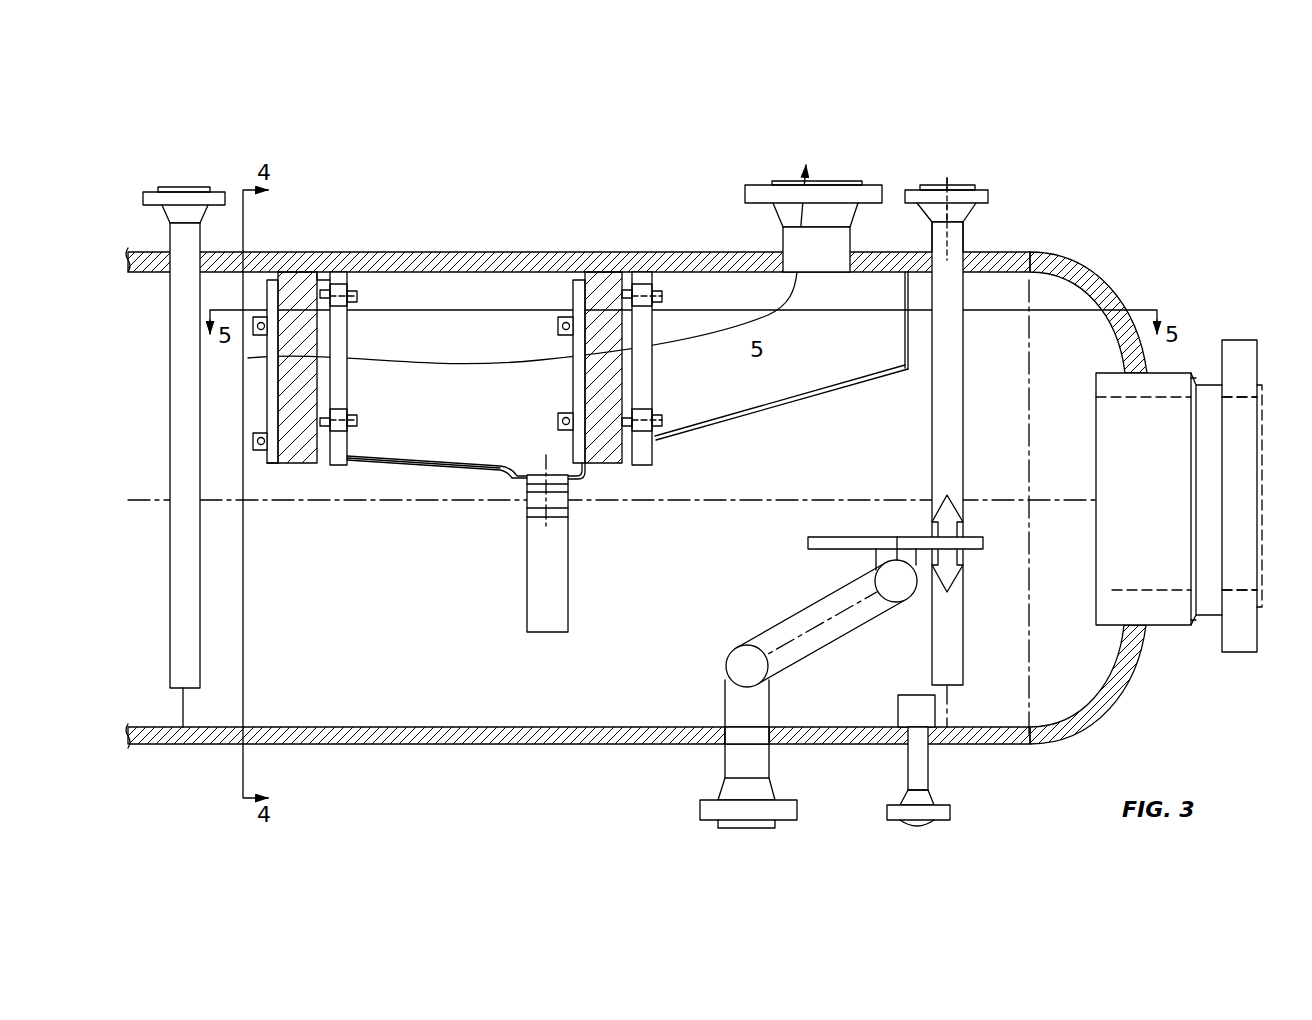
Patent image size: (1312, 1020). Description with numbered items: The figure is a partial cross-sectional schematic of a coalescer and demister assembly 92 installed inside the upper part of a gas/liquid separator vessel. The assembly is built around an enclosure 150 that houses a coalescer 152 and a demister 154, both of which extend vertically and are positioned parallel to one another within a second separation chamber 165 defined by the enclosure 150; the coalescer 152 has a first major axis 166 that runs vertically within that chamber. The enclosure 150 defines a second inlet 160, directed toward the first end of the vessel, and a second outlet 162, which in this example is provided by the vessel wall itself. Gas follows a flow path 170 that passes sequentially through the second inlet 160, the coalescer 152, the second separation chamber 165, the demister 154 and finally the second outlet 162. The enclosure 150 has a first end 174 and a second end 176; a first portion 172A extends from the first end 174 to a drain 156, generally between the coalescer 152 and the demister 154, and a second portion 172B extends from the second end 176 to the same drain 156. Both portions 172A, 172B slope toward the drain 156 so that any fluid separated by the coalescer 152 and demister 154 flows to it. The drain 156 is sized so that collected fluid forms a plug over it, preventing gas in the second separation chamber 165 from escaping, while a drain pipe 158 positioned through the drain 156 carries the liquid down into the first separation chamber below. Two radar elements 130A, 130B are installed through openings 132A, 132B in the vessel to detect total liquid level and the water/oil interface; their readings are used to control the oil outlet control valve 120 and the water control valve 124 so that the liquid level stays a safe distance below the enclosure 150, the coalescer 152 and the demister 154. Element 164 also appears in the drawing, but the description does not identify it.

The coalescer and demister assembly 92 is at (426, 480).
The oil outlet control valve 120 is at (711, 820).
The water control valve 124 is at (956, 815).
The radar element 130A is at (202, 178).
The radar element 130B is at (962, 176).
The opening 132A is at (182, 243).
The opening 132B is at (957, 240).
The enclosure 150 is at (387, 260).
The coalescer 152 is at (297, 262).
The demister 154 is at (597, 262).
The drain 156 is at (536, 472).
The drain pipe 158 is at (521, 581).
The second inlet 160 is at (264, 376).
The second outlet 162 is at (820, 262).
The inner wall surface 164 is at (500, 275).
The second separation chamber 165 is at (481, 329).
The first major axis 166 is at (338, 282).
The flow path 170 is at (372, 356).
The first portion 172A is at (388, 472).
The second portion 172B is at (690, 437).
The first end 174 is at (272, 473).
The second end 176 is at (897, 381).